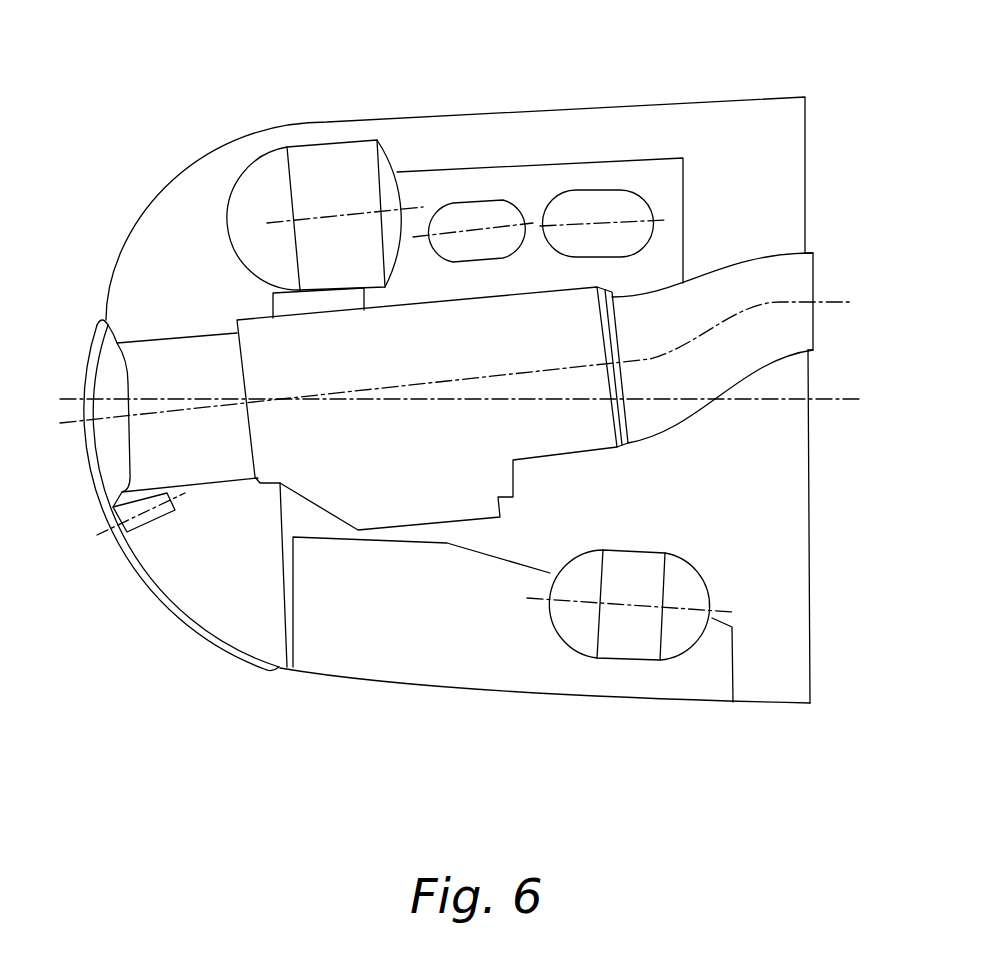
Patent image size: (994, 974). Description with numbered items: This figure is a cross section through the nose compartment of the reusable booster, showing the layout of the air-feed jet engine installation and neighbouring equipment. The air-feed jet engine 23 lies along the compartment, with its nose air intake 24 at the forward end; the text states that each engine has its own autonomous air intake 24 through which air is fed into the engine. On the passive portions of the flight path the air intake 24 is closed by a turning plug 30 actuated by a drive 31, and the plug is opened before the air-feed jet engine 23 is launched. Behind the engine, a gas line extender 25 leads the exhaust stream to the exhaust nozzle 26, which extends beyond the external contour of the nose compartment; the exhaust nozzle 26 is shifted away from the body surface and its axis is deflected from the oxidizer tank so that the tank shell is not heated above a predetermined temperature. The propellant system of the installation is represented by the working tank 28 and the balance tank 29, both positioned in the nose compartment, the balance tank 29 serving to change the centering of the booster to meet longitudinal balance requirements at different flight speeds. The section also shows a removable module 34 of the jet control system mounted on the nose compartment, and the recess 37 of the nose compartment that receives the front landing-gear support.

The air-feed jet engine 23 is at (265, 345).
The air intake 24 is at (172, 360).
The gas line extender 25 is at (685, 307).
The exhaust nozzle 26 is at (788, 267).
The working tank 28 is at (632, 643).
The balance tank 29 is at (262, 170).
The turning plug 30 is at (213, 640).
The drive 31 is at (147, 525).
The removable module 34 is at (468, 187).
The recess 37 is at (367, 650).